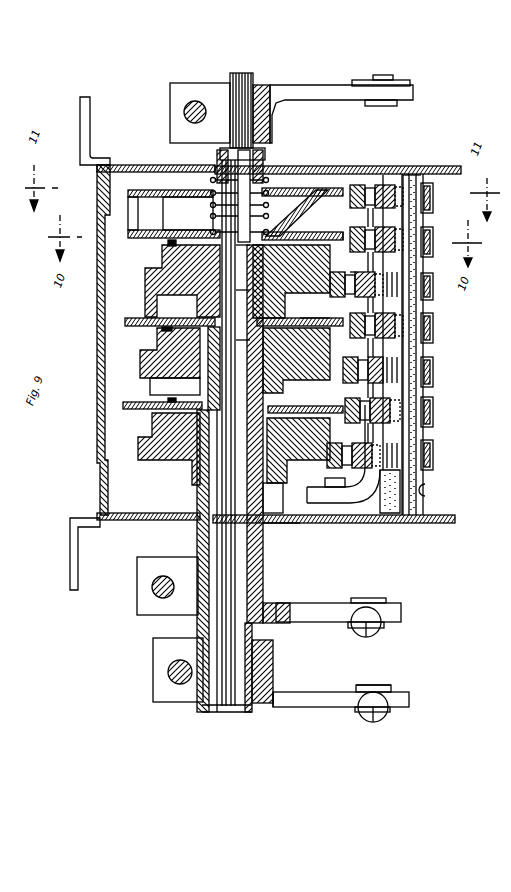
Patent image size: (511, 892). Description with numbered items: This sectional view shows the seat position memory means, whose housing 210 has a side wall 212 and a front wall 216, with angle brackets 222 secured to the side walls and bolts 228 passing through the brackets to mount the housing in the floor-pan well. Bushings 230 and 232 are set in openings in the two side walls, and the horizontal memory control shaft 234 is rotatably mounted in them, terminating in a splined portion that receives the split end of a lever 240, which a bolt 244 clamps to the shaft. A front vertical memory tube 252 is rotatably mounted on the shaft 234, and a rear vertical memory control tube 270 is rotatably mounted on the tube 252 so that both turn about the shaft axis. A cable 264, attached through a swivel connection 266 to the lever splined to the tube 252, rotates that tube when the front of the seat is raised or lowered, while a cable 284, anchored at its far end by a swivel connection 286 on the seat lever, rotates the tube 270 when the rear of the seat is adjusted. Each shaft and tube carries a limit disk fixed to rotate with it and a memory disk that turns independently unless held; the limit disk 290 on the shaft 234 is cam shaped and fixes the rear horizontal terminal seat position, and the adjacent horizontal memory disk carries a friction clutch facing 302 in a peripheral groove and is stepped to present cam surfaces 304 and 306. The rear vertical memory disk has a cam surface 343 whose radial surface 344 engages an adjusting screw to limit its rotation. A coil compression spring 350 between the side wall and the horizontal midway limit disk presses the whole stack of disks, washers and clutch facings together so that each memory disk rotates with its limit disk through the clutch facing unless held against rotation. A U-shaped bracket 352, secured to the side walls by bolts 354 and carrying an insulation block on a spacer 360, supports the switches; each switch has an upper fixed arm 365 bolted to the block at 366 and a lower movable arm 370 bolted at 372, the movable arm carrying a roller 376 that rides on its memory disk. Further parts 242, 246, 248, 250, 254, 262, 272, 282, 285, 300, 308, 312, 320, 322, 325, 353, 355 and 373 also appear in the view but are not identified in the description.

The housing 210 is at (112, 520).
The side wall 212 is at (450, 170).
The angle brackets 222 is at (78, 580).
The bolt 244 is at (195, 100).
The bushing 230 is at (240, 73).
The horizontal memory control shaft 234 is at (230, 712).
The bearing sleeve 262 is at (255, 712).
The spring 250 is at (210, 180).
The retainer plate 248 is at (140, 190).
The limit disk 290 is at (136, 210).
The coil housing 242 is at (170, 222).
The cable 284 is at (145, 270).
The swivel connection 286 is at (160, 290).
The bolt 372 is at (288, 300).
The separator plate 285 is at (160, 305).
The rotor block 320 is at (145, 345).
The rotor block 373 is at (292, 335).
The radial surface 344 is at (140, 420).
The cam surface 343 is at (155, 470).
The rotor block 353 is at (262, 445).
The roller 376 is at (237, 252).
The shaft portion 325 is at (238, 277).
The shaft portion 322 is at (235, 329).
The lower or movable arm 370 is at (308, 314).
The cam surface 304 is at (338, 232).
The terminal 312 is at (352, 270).
The lever 240 is at (330, 92).
The arm pad 246 is at (360, 80).
The rear vertical memory control tube 270 is at (277, 160).
The lower arm 272 is at (320, 612).
The screw 282 is at (366, 637).
The bolts 228 is at (318, 708).
The cable 264 is at (373, 722).
The swivel connection 266 is at (395, 687).
The front wall 216 is at (300, 708).
The circuit board 300 is at (380, 523).
The cam surface 306 is at (410, 523).
The friction type clutch facing 302 is at (305, 530).
The front vertical memory tube 252 is at (283, 545).
The bushing 232 is at (280, 535).
The contact assembly 254 is at (350, 170).
The bolts 354 is at (434, 242).
The upper or fixed switch arm 365 is at (434, 287).
The contact assembly 355 is at (434, 328).
The bolt 366 is at (434, 348).
The spacer 360 is at (434, 412).
The coil compression spring 350 is at (434, 455).
The connector 308 is at (430, 172).
The U-shaped bracket 352 is at (403, 172).